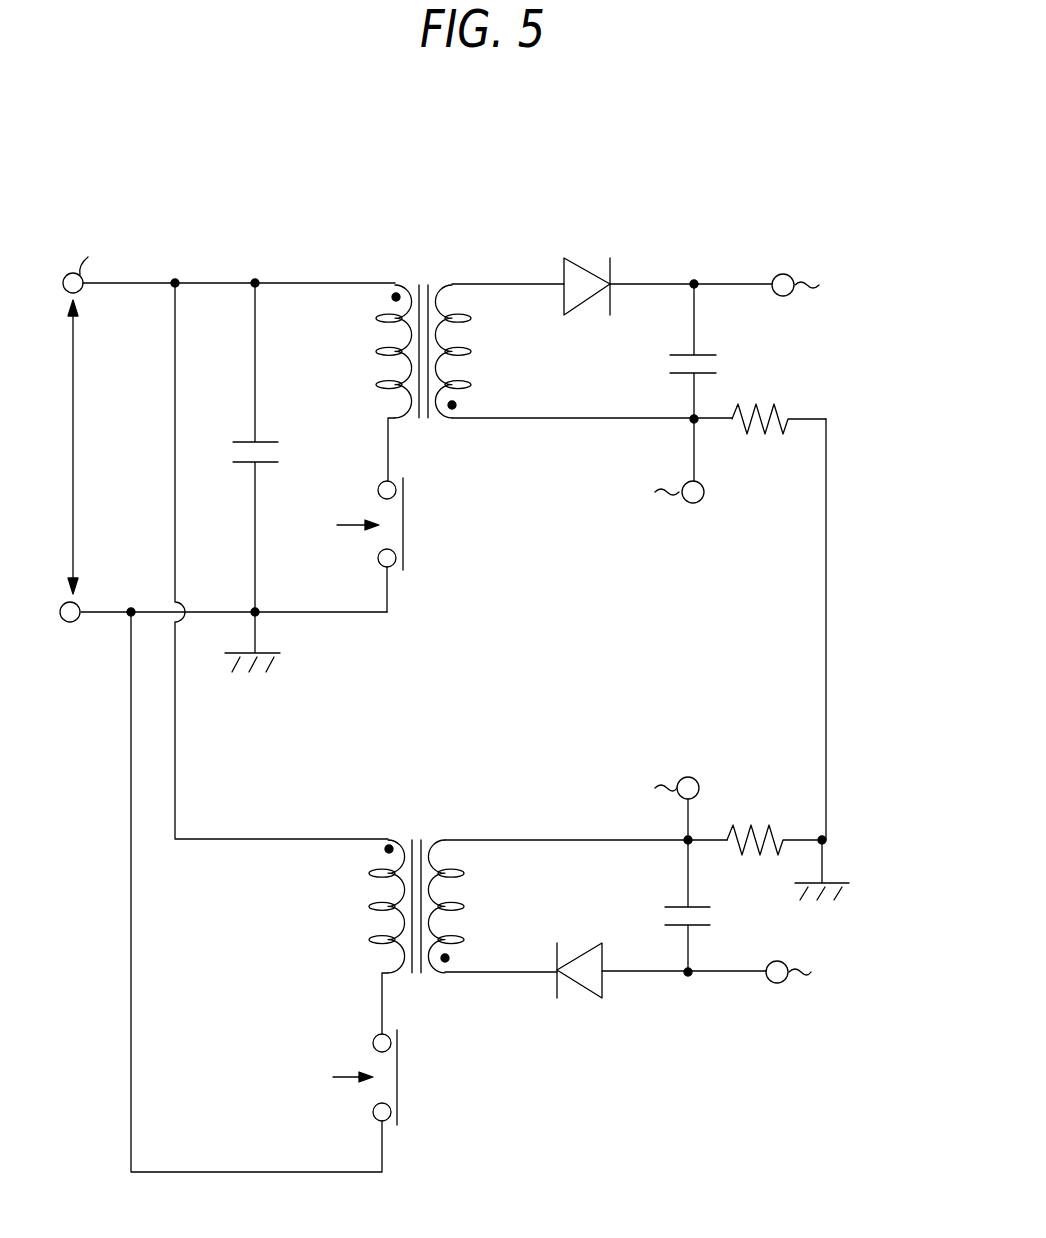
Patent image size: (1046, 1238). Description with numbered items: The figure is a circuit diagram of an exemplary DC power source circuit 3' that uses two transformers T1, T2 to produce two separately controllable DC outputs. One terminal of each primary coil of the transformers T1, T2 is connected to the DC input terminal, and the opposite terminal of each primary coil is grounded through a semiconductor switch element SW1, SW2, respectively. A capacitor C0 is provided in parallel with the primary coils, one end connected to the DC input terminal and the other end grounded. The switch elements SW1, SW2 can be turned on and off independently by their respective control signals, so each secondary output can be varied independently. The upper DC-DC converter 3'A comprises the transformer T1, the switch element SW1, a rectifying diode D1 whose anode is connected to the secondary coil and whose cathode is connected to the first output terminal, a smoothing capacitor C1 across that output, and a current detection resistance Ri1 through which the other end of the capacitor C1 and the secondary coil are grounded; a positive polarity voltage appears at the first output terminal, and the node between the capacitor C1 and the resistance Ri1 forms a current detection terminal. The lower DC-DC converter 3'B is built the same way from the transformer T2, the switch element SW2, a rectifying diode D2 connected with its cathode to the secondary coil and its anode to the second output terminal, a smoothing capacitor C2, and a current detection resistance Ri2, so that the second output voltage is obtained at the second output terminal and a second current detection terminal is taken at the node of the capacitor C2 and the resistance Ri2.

The DC power source circuit 3' is at (478, 643).
The DC-DC converter 3'A is at (573, 506).
The DC-DC converter 3'B is at (567, 945).
The transformer T1 is at (450, 284).
The transformer T2 is at (443, 840).
The capacitor C0 is at (250, 441).
The smoothing capacitor C1 is at (682, 352).
The smoothing capacitor C2 is at (677, 904).
The rectifying diode D1 is at (572, 262).
The rectifying diode D2 is at (590, 946).
The semiconductor switch element SW1 is at (377, 528).
The semiconductor switch element SW2 is at (372, 1081).
The current detection resistance Ri1 is at (776, 406).
The current detection resistance Ri2 is at (772, 829).